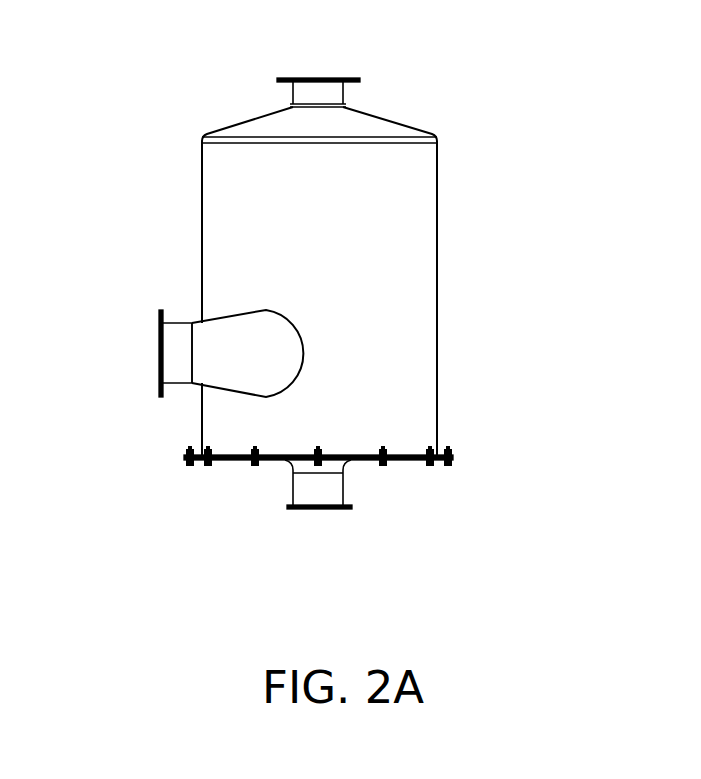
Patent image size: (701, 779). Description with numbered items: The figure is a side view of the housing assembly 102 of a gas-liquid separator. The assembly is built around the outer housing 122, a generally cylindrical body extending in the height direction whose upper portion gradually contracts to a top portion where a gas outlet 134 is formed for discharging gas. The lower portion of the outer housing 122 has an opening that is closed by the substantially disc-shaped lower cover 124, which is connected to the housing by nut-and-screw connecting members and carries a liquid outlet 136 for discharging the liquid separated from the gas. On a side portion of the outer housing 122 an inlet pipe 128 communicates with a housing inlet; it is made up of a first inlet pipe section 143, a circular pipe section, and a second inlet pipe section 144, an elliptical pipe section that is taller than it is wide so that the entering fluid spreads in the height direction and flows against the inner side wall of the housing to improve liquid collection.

The housing assembly 102 is at (475, 112).
The outer housing 122 is at (428, 255).
The lower cover 124 is at (407, 462).
The inlet pipe 128 is at (175, 408).
The gas outlet 134 is at (323, 80).
The liquid outlet 136 is at (318, 512).
The first inlet pipe section 143 is at (158, 350).
The second inlet pipe section 144 is at (233, 325).